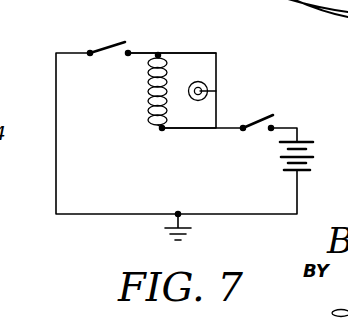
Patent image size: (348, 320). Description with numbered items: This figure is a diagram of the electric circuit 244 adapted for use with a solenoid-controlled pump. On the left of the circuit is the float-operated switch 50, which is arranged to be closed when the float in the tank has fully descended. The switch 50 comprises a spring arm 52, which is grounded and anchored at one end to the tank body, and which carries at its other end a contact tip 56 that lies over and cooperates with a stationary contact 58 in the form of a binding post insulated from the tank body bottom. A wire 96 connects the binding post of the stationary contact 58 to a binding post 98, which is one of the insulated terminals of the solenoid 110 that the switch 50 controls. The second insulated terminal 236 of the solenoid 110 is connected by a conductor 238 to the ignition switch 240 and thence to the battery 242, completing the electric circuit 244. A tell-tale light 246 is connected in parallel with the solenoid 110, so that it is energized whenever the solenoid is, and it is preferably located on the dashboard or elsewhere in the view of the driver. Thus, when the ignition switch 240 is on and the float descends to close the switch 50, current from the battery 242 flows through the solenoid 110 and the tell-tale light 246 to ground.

The switch 50 is at (141, 43).
The spring arm 52 is at (110, 43).
The contact tip 56 is at (193, 233).
The stationary contact 58 is at (127, 56).
The wire 96 is at (134, 56).
The binding post 98 is at (160, 52).
The solenoid 110 is at (150, 96).
The second insulated terminal 236 is at (161, 130).
The conductor 238 is at (192, 129).
The ignition switch 240 is at (281, 121).
The battery 242 is at (280, 160).
The electric circuit 244 is at (52, 93).
The tell-tale light 246 is at (206, 81).